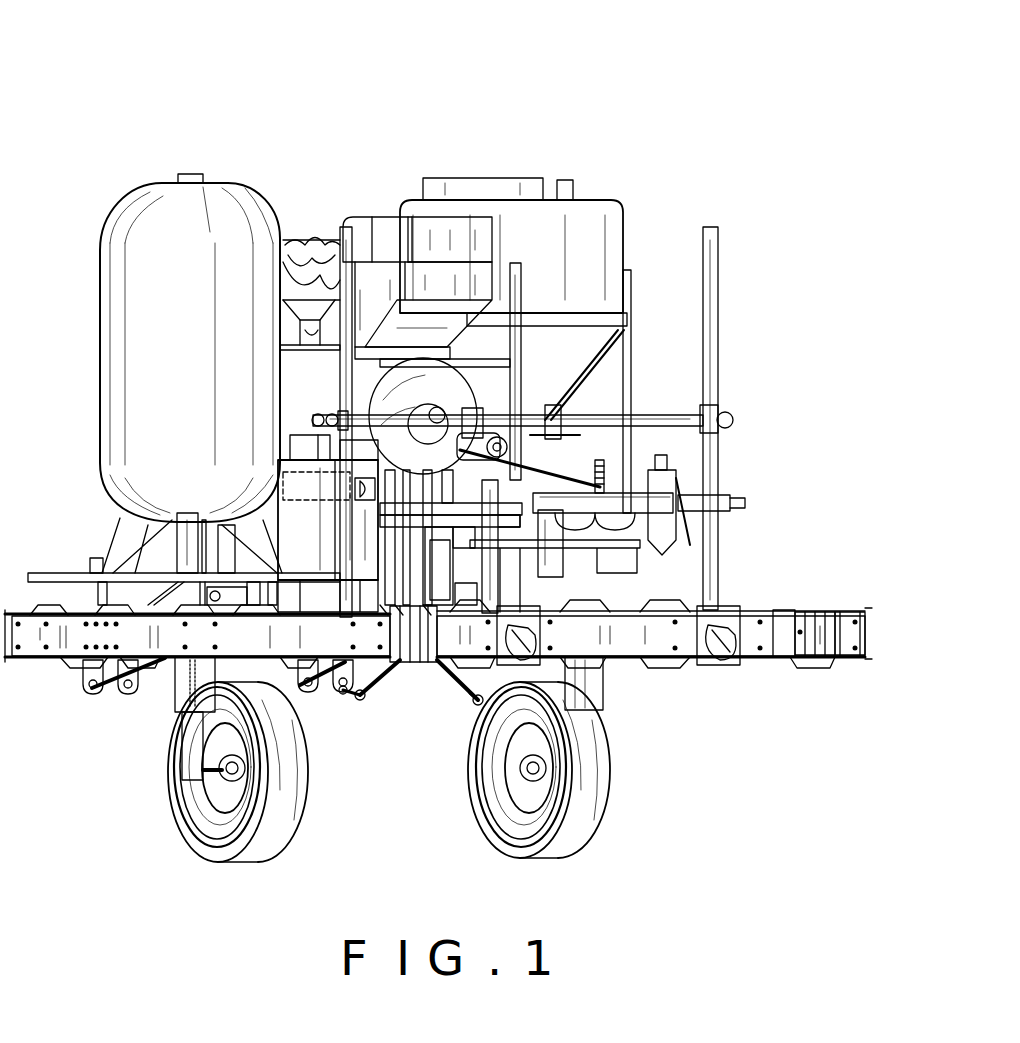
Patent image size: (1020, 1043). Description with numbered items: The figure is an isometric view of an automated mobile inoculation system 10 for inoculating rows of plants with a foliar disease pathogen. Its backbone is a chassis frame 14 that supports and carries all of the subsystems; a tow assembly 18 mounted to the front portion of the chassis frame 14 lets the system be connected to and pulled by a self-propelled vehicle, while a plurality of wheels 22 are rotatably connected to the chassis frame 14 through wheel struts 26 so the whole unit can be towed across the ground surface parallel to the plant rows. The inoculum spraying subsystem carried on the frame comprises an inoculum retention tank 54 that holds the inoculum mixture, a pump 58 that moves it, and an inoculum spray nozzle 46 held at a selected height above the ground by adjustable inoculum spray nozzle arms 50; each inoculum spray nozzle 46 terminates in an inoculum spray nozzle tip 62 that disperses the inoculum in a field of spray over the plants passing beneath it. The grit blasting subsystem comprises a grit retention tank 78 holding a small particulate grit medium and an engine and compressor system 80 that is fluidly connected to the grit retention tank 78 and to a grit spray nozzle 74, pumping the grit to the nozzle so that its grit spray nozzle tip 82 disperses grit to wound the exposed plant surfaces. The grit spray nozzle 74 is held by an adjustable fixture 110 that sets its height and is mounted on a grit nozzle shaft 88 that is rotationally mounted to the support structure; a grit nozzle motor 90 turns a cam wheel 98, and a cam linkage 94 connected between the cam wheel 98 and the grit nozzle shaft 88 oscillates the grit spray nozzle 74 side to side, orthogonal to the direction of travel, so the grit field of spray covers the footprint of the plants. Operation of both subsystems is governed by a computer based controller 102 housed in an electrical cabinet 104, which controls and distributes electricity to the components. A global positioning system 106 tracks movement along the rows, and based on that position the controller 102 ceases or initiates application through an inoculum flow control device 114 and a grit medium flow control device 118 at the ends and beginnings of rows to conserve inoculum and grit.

The automated mobile inoculation system 10 is at (210, 92).
The chassis frame 14 is at (780, 637).
The tow assembly 18 is at (130, 695).
The wheels 22 is at (257, 852).
The wheel struts 26 is at (187, 750).
The inoculum spray nozzle 46 is at (338, 685).
The inoculum spray nozzle arms 50 is at (447, 672).
The inoculum retention tank 54 is at (603, 225).
The pump 58 is at (500, 600).
The inoculum spray nozzle tip 62 is at (345, 693).
The grit spray nozzle 74 is at (668, 483).
The grit retention tank 78 is at (220, 212).
The engine and compressor system 80 is at (430, 390).
The grit spray nozzle tip 82 is at (565, 575).
The grit nozzle shaft 88 is at (720, 413).
The grit nozzle motor 90 is at (558, 410).
The cam linkage 94 is at (590, 433).
The cam wheel 98 is at (433, 440).
The computer based controller 102 is at (298, 488).
The electrical cabinet 104 is at (305, 520).
The global positioning system 106 is at (305, 450).
The adjustable fixture 110 is at (655, 485).
The inoculum flow control device 114 is at (436, 591).
The grit medium flow control device 118 is at (690, 500).